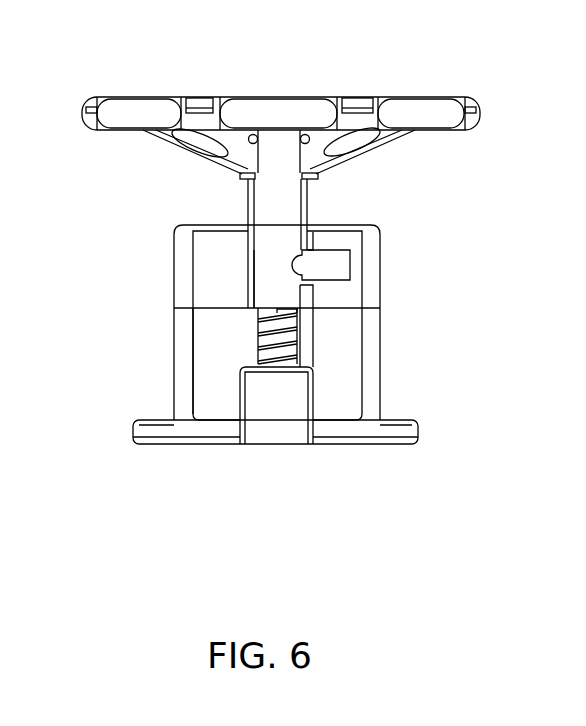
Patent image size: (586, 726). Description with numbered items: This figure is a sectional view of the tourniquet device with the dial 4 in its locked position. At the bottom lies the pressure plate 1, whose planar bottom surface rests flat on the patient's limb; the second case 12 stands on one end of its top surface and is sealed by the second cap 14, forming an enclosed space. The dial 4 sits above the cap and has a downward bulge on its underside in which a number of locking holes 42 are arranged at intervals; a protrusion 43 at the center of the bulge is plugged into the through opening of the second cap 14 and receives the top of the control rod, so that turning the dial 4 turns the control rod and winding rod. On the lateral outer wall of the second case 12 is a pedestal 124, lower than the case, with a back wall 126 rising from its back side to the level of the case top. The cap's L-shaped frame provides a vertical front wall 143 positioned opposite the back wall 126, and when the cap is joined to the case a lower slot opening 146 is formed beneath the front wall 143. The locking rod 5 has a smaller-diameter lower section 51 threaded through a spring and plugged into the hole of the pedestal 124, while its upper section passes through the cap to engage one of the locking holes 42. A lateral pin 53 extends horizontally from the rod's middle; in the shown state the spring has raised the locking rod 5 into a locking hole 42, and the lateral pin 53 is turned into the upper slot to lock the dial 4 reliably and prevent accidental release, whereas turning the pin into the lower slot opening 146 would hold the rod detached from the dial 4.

The pressure plate 1 is at (227, 435).
The dial 4 is at (272, 103).
The locking rod 5 is at (287, 207).
The second case 12 is at (370, 392).
The second cap 14 is at (368, 280).
The locking holes 42 is at (362, 138).
The protrusion 43 is at (245, 174).
The lower section 51 is at (262, 320).
The lateral pin 53 is at (333, 250).
The pedestal 124 is at (290, 417).
The back wall 126 is at (310, 340).
The front wall 143 is at (247, 267).
The lower slot opening 146 is at (247, 347).